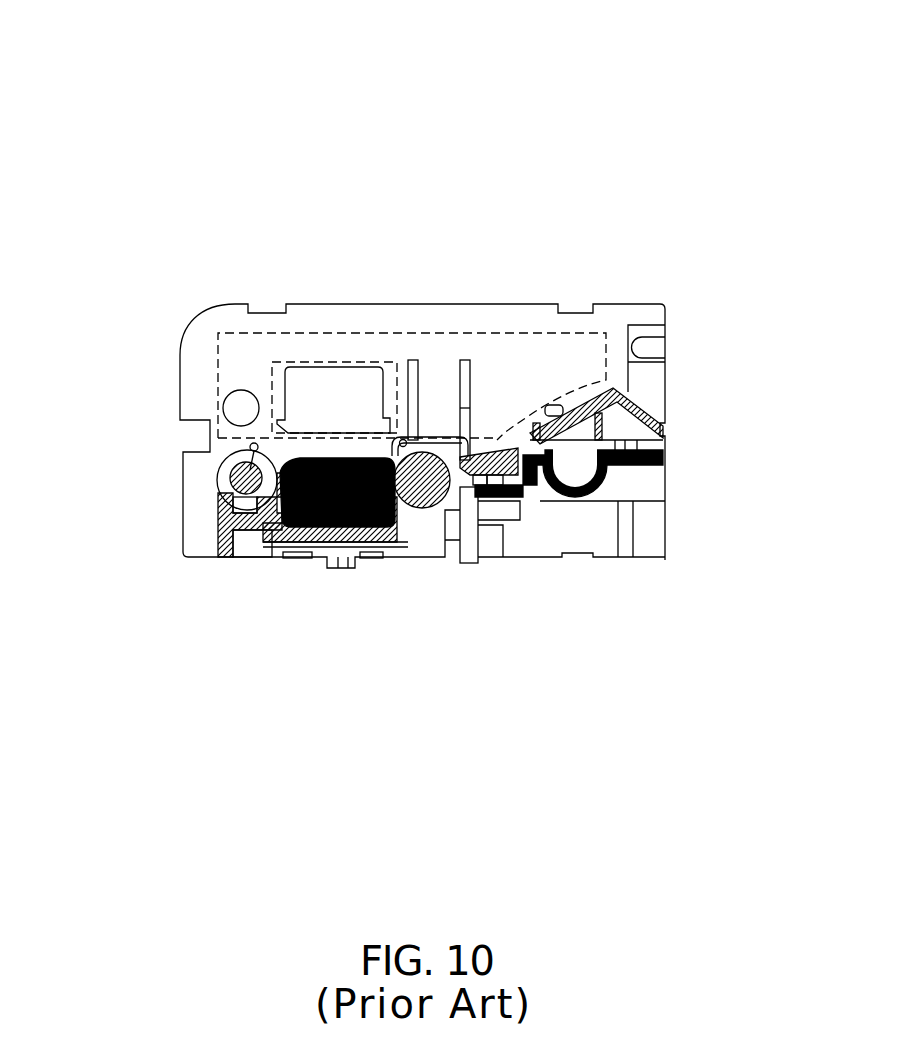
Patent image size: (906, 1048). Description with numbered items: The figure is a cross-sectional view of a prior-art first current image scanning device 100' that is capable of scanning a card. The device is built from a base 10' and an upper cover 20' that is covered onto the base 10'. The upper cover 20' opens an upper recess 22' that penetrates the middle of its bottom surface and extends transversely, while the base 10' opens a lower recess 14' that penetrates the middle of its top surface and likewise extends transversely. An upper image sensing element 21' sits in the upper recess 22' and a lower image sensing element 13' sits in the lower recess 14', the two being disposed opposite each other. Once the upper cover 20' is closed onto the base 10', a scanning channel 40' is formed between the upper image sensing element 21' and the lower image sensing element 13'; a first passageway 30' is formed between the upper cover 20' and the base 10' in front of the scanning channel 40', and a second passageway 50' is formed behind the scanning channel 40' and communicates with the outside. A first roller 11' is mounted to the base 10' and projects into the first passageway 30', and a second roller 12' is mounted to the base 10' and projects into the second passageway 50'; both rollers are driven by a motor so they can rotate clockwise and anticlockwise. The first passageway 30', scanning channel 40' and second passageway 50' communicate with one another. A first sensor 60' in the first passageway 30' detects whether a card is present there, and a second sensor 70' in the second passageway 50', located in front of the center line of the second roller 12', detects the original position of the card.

The first current image scanning device 100' is at (61, 37).
The base 10' is at (422, 470).
The first roller 11' is at (205, 480).
The second roller 12' is at (459, 540).
The lower image sensing element 13' is at (337, 567).
The lower recess 14' is at (330, 547).
The upper cover 20' is at (350, 386).
The upper image sensing element 21' is at (334, 334).
The upper recess 22' is at (203, 329).
The first passageway 30' is at (177, 448).
The scanning channel 40' is at (406, 387).
The second passageway 50' is at (630, 442).
The first sensor 60' is at (250, 564).
The second sensor 70' is at (455, 363).